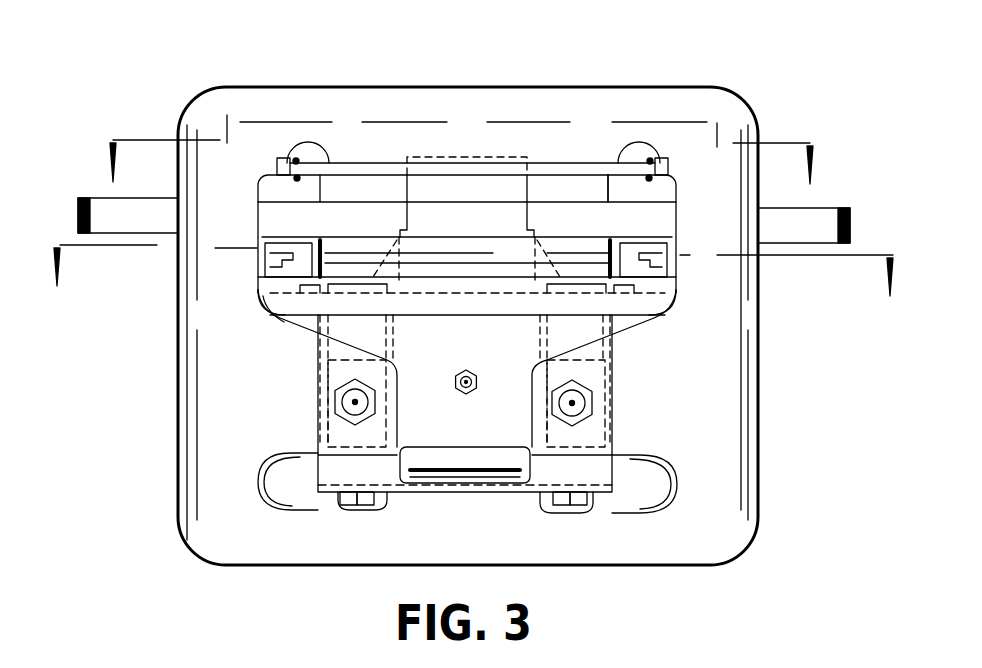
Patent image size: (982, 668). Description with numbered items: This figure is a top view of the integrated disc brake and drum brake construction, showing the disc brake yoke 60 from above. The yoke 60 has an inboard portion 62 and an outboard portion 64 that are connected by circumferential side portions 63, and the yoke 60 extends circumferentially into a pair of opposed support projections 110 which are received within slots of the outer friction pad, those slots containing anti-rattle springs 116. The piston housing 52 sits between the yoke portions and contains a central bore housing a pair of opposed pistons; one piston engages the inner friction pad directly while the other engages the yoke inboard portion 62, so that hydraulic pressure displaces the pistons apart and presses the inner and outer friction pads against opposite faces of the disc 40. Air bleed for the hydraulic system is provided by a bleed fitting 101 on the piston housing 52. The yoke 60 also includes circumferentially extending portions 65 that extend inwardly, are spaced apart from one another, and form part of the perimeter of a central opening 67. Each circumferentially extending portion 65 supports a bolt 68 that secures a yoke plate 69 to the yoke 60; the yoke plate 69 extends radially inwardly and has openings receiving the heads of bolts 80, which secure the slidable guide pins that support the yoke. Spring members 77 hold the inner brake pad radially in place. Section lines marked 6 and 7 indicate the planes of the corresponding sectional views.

The yoke 60 is at (760, 462).
The outboard portion 64 is at (487, 121).
The circumferential side portions 63 is at (242, 359).
The support projections 110 is at (277, 166).
The anti-rattle springs 116 is at (290, 152).
The central opening 67 is at (670, 202).
The spring members 77 is at (262, 268).
The disc 40 is at (814, 241).
The piston housing 52 is at (463, 349).
The circumferentially extending portions 65 is at (307, 442).
The bolt 68 is at (337, 404).
The bleed fitting 101 is at (474, 376).
The inboard portion 62 is at (477, 527).
The yoke plate 69 is at (587, 484).
The bolt 80 is at (341, 512).
The section line 6- 6 is at (462, 150).
The section line 7- 7 is at (470, 275).